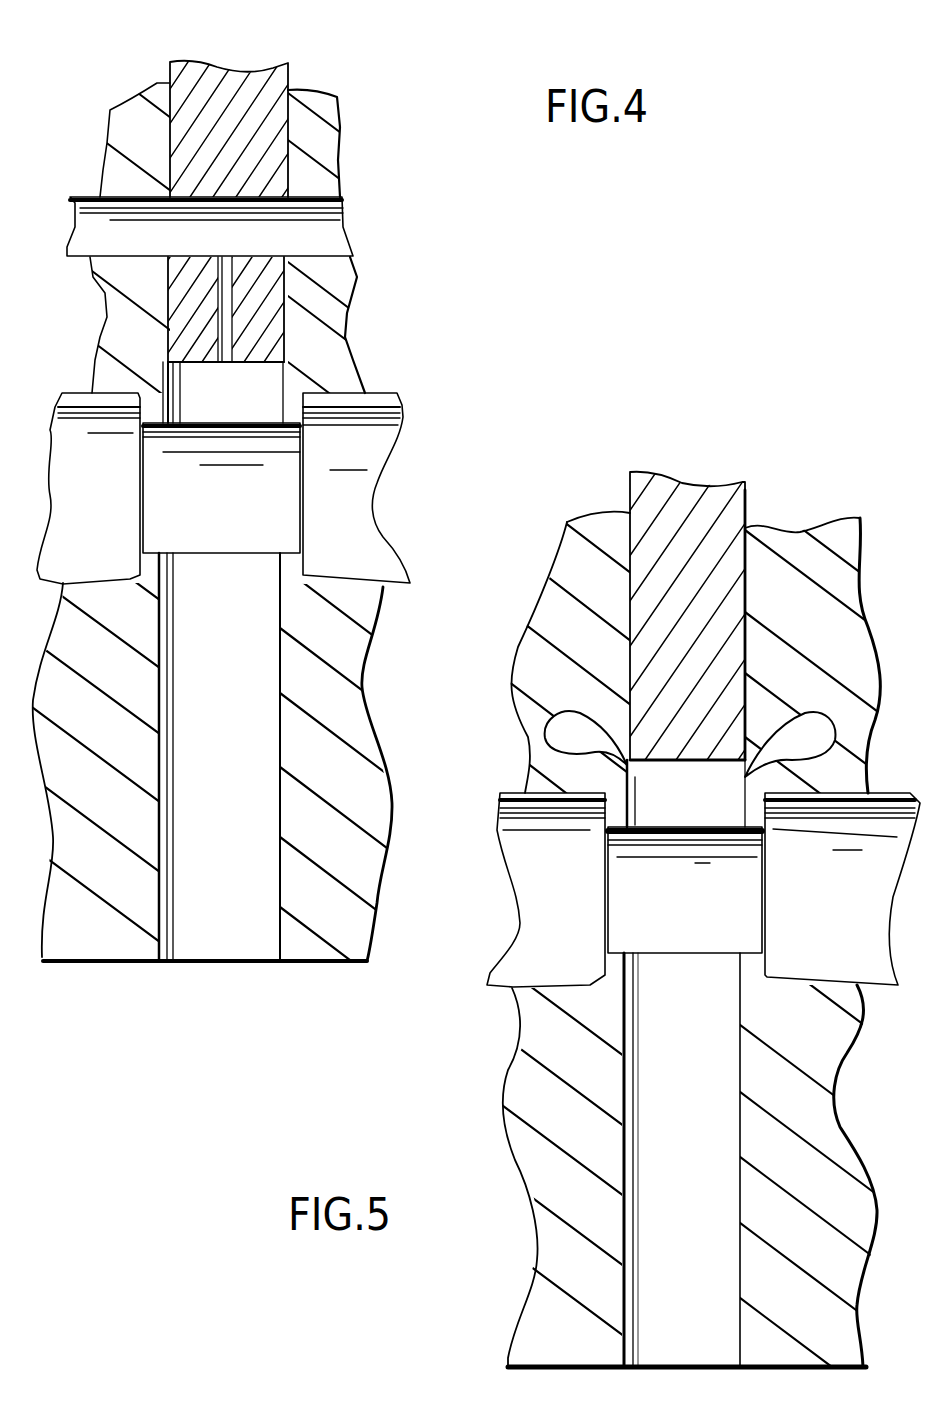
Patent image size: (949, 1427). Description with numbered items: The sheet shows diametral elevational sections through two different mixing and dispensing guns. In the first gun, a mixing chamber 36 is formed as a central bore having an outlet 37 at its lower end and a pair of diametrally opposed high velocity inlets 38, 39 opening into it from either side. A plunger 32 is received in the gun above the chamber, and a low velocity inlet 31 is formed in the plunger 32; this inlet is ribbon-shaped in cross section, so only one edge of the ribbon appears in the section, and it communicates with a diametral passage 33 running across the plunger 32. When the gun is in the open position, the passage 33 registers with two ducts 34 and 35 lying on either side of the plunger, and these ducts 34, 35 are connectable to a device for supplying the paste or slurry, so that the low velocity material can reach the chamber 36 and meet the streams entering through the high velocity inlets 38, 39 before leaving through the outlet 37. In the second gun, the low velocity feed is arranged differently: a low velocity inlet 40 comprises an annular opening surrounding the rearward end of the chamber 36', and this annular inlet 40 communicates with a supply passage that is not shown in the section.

In FIG. 4, the low velocity inlet 31 is at (223, 317).
In FIG. 4, the plunger 32 is at (252, 293).
In FIG. 4, the diametral passage 33 is at (215, 223).
In FIG. 4, the duct 34 is at (132, 230).
In FIG. 4, the duct 35 is at (330, 223).
In FIG. 4, the mixing chamber 36 is at (299, 757).
In FIG. 5, the chamber 36' is at (601, 1160).
In FIG. 4, the outlet 37 is at (234, 965).
In FIG. 4, the high velocity inlet 38 is at (147, 483).
In FIG. 4, the high velocity inlet 39 is at (307, 487).
In FIG. 5, the low velocity inlet 40 is at (572, 733).